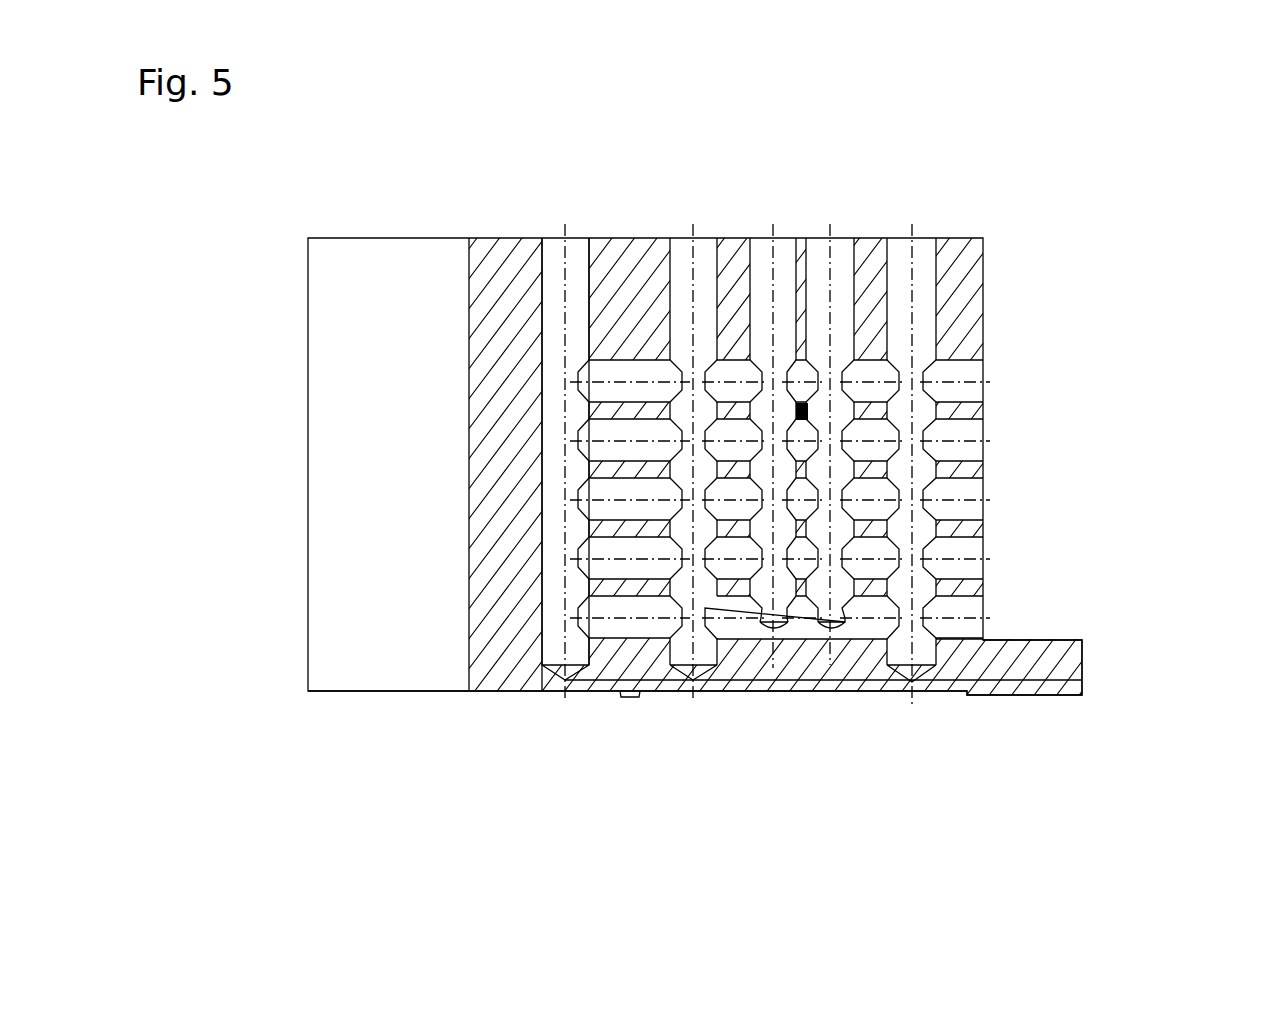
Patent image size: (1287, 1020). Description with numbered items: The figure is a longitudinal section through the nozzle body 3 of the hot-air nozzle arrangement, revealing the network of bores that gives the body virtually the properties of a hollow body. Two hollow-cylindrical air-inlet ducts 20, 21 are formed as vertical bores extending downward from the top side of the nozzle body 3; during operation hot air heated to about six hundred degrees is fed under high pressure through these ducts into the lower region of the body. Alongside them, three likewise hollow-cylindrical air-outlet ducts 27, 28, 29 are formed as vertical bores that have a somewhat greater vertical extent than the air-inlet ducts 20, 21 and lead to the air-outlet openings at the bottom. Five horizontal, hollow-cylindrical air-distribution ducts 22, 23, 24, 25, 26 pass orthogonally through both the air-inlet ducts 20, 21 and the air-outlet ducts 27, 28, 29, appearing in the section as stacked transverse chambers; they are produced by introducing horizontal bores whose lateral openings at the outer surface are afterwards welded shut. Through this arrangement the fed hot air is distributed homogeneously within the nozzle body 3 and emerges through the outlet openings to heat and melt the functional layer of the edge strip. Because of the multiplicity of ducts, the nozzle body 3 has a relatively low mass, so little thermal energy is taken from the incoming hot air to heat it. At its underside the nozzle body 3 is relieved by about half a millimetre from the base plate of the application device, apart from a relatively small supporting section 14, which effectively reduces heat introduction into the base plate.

The nozzle body 3 is at (500, 283).
The supporting section 14 is at (627, 695).
The air-inlet duct 20 is at (763, 278).
The air-inlet duct 21 is at (823, 270).
The air-distribution duct 22 is at (961, 374).
The air-distribution duct 23 is at (957, 439).
The air-distribution duct 24 is at (953, 492).
The air-distribution duct 25 is at (959, 557).
The air-distribution duct 26 is at (959, 609).
The air-outlet duct 27 is at (553, 263).
The air-outlet duct 28 is at (680, 275).
The air-outlet duct 29 is at (908, 252).